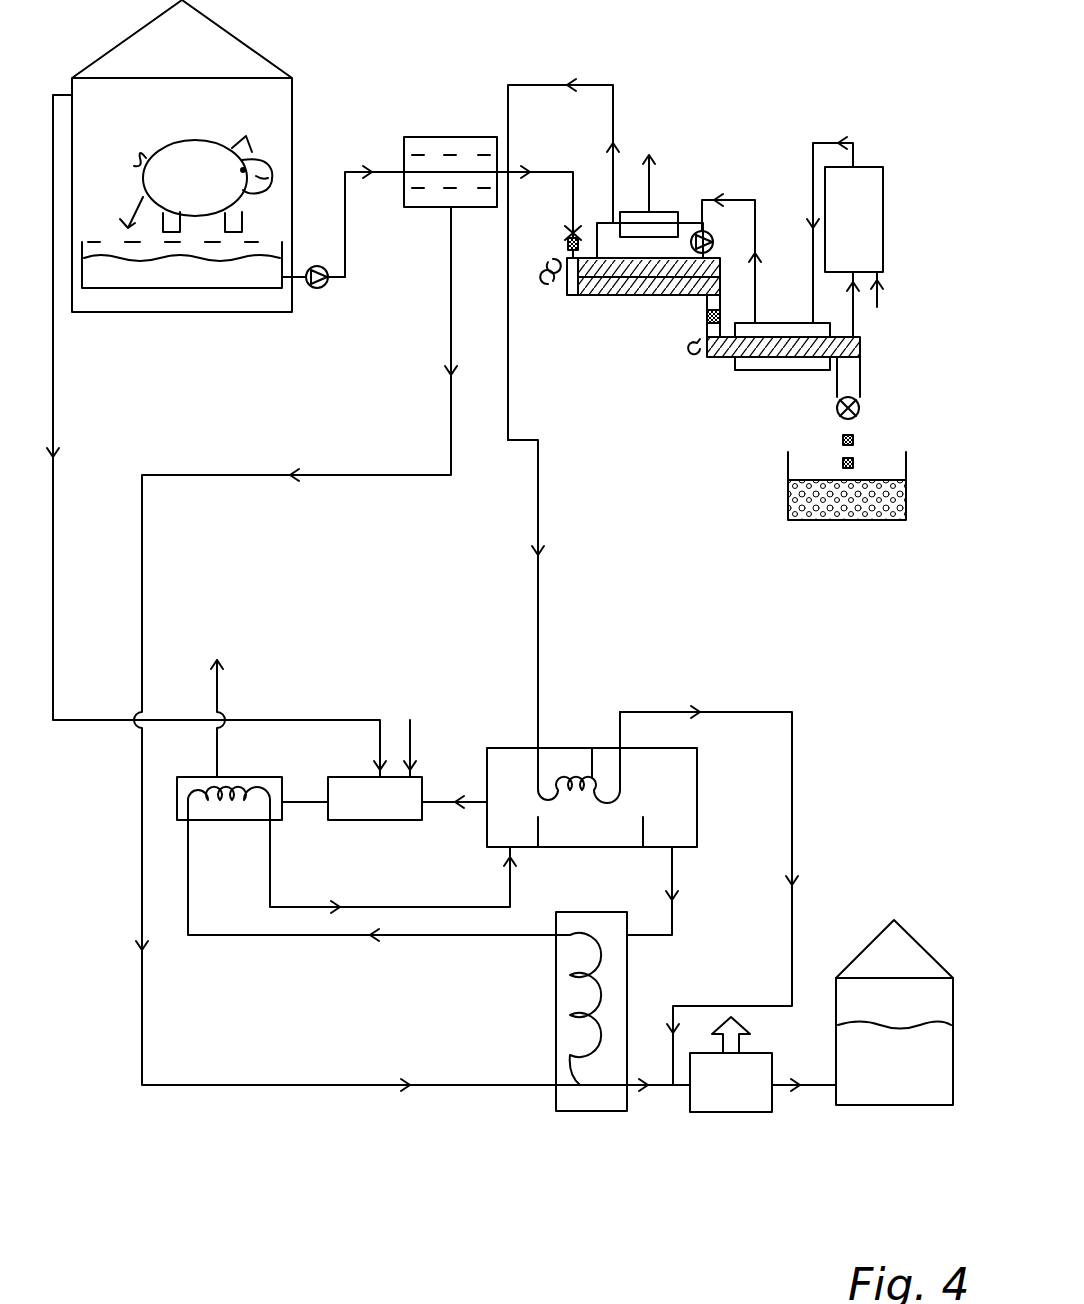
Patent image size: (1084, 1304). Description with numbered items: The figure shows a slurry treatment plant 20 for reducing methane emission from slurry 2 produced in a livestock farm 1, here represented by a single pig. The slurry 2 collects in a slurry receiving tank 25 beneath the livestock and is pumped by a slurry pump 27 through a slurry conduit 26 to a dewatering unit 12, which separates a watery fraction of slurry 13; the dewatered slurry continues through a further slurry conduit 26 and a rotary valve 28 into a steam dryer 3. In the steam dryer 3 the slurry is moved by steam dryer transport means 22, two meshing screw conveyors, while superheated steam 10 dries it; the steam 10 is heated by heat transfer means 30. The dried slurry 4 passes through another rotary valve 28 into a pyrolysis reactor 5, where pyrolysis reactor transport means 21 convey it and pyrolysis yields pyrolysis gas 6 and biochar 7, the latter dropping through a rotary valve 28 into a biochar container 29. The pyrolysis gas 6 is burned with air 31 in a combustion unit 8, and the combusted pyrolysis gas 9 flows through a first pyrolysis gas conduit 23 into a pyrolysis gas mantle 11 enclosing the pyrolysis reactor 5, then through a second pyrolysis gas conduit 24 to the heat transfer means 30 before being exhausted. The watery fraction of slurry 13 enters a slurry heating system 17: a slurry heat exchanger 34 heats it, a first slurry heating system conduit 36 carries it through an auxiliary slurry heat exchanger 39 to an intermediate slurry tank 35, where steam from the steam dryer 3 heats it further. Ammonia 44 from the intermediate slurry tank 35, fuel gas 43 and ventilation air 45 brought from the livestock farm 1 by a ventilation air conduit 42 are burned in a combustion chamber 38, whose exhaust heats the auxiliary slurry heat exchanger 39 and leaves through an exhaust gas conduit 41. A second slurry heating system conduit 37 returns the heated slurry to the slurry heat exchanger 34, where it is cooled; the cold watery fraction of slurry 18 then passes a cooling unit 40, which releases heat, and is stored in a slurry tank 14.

The livestock farm 1 is at (272, 58).
The slurry 2 is at (105, 283).
The steam dryer 3 is at (624, 319).
The dried slurry 4 is at (720, 325).
The pyrolysis reactor 5 is at (724, 360).
The pyrolysis gas 6 is at (853, 333).
The biochar 7 is at (853, 440).
The combustion unit 8 is at (883, 220).
The combusted pyrolysis gas 9 is at (826, 228).
The steam 10 is at (598, 223).
The pyrolysis gas mantle 11 is at (790, 323).
The dewatering unit 12 is at (452, 137).
The watery fraction of slurry 13 is at (451, 287).
The slurry tank 14 is at (895, 1105).
The slurry heating system 17 is at (768, 694).
The cold watery fraction of slurry 18 is at (668, 1085).
The slurry treatment plant 20 is at (849, 56).
The pyrolysis reactor transport means 21 is at (707, 352).
The steam dryer transport means 22 is at (572, 296).
The first pyrolysis gas conduit 23 is at (856, 147).
The second pyrolysis gas conduit 24 is at (742, 200).
The slurry receiving tank 25 is at (180, 288).
The slurry conduit 26 is at (383, 172).
The slurry pump 27 is at (320, 288).
The rotary valve 28 is at (568, 243).
The biochar container 29 is at (788, 492).
The heat transfer means 30 is at (665, 212).
The air 31 is at (877, 292).
The slurry heat exchanger 34 is at (627, 978).
The intermediate slurry tank 35 is at (697, 798).
The first slurry heating system conduit 36 is at (388, 907).
The second slurry heating system conduit 37 is at (675, 878).
The combustion chamber 38 is at (330, 820).
The auxiliary slurry heat exchanger 39 is at (225, 820).
The cooling unit 40 is at (728, 1112).
The exhaust gas conduit 41 is at (217, 683).
The ventilation air conduit 42 is at (230, 436).
The fuel gas 43 is at (410, 735).
The ammonia 44 is at (445, 802).
The ventilation air 45 is at (53, 425).